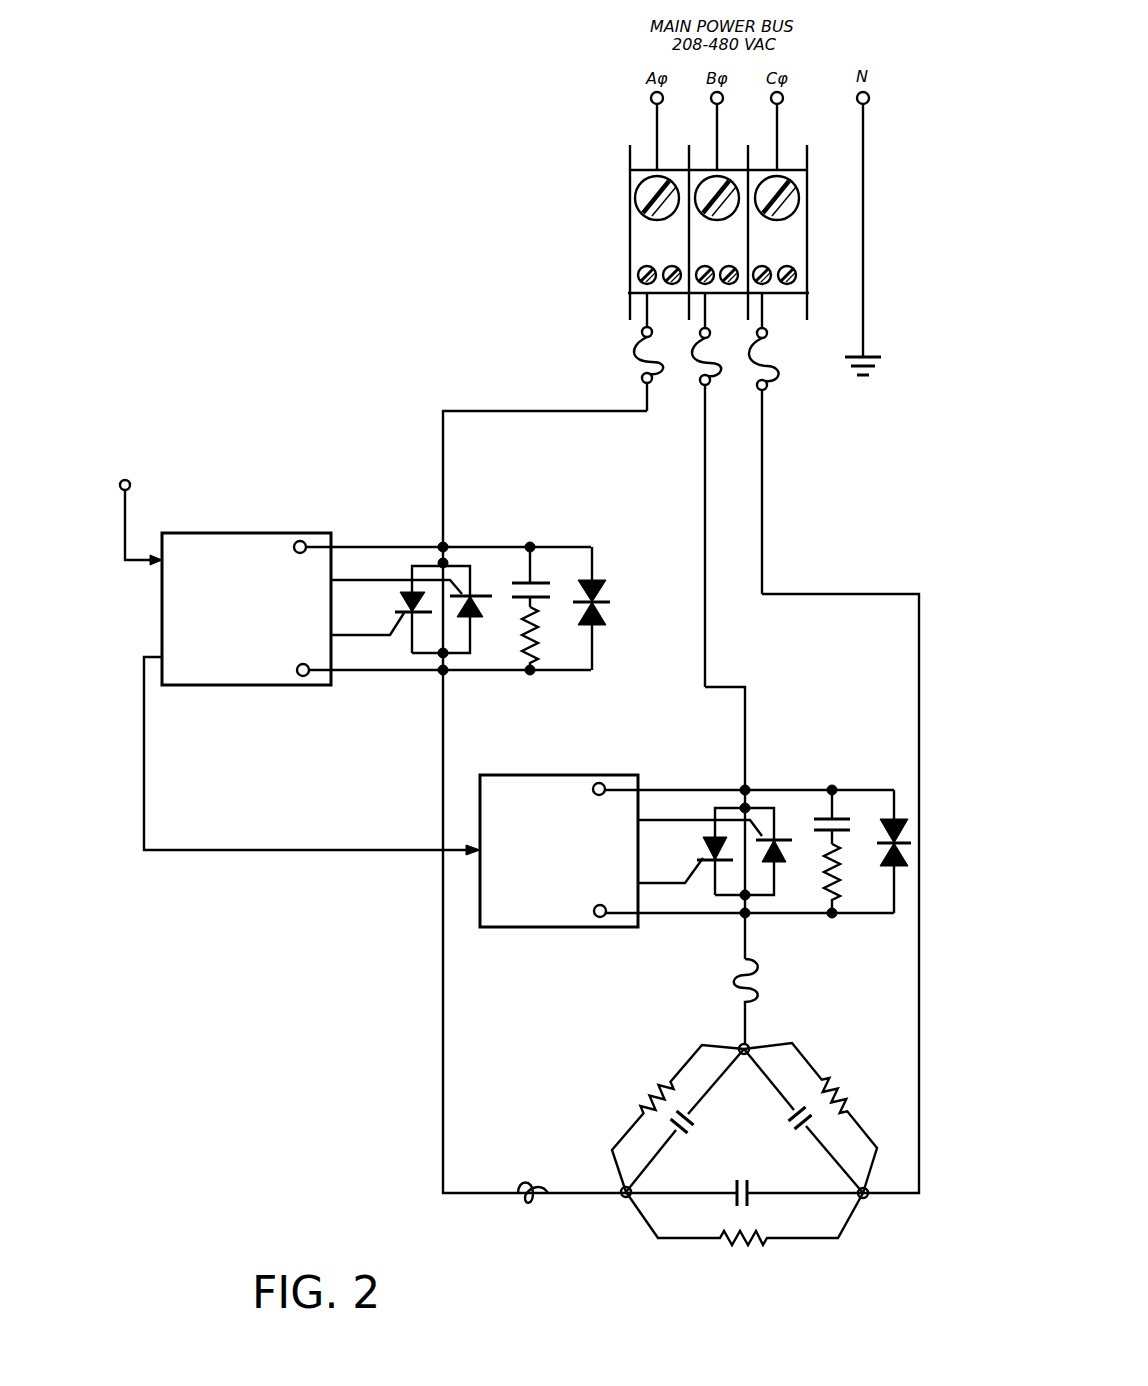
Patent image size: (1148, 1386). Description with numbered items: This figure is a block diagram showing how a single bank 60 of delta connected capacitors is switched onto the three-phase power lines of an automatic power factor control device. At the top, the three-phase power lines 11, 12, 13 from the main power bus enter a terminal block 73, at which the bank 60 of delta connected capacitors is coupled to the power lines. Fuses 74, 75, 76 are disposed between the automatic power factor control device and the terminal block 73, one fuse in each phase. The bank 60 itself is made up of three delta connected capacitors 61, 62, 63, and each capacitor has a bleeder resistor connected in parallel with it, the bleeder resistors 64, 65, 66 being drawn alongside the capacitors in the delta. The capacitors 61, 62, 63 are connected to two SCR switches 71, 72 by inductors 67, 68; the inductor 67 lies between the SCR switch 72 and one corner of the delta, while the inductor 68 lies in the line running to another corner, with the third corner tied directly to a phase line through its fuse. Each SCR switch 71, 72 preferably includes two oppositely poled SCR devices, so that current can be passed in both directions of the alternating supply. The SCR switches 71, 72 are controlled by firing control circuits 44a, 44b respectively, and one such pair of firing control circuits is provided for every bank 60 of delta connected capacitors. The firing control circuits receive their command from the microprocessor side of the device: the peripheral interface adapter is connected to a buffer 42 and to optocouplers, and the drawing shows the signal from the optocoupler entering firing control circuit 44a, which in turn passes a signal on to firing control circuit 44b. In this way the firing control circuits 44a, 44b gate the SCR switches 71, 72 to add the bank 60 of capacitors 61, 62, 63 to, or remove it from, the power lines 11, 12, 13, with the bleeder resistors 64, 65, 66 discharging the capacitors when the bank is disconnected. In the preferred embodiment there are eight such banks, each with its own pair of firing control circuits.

The power line 11 is at (655, 122).
The power line 12 is at (715, 122).
The power line 13 is at (779, 122).
The terminal block 73 is at (628, 219).
The fuse 74 is at (634, 354).
The fuse 75 is at (698, 366).
The fuse 76 is at (777, 378).
The buffer 42 is at (127, 492).
The firing control circuit 44a is at (296, 515).
The firing control circuit 44b is at (573, 768).
The SCR switch 71 is at (510, 545).
The SCR switch 72 is at (868, 777).
The inductor 67 is at (754, 972).
The inductor 68 is at (532, 1185).
The bank of delta connected capacitors 60 is at (726, 1165).
The capacitor 61 is at (798, 1131).
The capacitor 62 is at (733, 1186).
The capacitor 63 is at (694, 1121).
The bleeder resistor 64 is at (833, 1078).
The bleeder resistor 65 is at (757, 1248).
The bleeder resistor 66 is at (642, 1098).